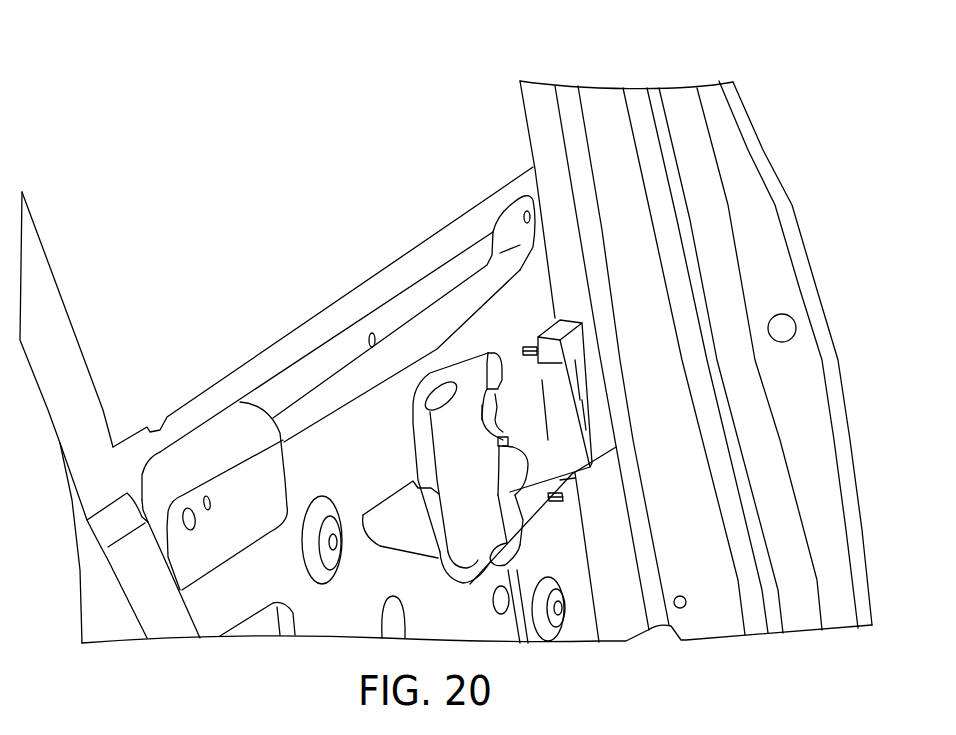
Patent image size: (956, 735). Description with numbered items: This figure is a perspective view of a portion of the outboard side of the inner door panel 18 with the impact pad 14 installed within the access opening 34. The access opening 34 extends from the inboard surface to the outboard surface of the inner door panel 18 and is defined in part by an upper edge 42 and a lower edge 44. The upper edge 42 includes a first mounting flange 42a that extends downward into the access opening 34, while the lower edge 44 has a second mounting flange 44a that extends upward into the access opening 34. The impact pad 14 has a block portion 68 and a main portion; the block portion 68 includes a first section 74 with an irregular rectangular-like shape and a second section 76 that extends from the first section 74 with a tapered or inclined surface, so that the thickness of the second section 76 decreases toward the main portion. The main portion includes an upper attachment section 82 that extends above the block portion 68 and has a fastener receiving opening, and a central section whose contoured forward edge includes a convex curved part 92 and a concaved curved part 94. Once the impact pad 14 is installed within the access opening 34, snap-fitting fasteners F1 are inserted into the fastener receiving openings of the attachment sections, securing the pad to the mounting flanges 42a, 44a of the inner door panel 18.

The inner door panel 18 is at (606, 80).
The impact pad 14 is at (602, 351).
The first section 74 is at (585, 383).
The block portion 68 is at (588, 416).
The second section 76 is at (540, 427).
The upper attachment section 82 is at (532, 366).
The snap-fitting fasteners F1 is at (594, 527).
The upper edge 42 is at (414, 408).
The first mounting flange 42a is at (506, 352).
The convex curved part 92 is at (486, 416).
The concaved curved part 94 is at (512, 473).
The lower edge 44 is at (517, 543).
The second mounting flange 44a is at (575, 478).
The access opening 34 is at (477, 583).